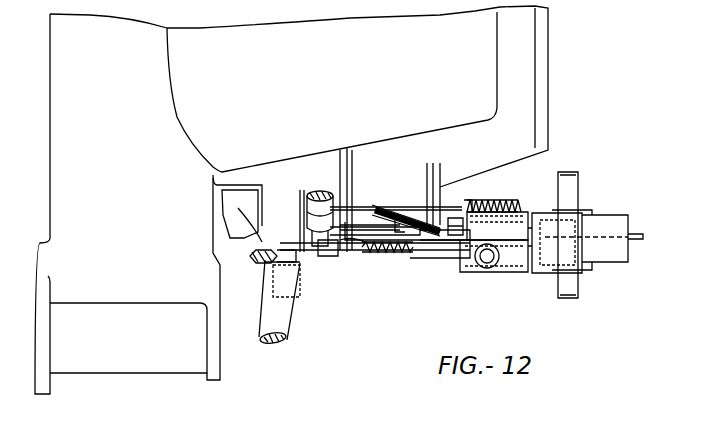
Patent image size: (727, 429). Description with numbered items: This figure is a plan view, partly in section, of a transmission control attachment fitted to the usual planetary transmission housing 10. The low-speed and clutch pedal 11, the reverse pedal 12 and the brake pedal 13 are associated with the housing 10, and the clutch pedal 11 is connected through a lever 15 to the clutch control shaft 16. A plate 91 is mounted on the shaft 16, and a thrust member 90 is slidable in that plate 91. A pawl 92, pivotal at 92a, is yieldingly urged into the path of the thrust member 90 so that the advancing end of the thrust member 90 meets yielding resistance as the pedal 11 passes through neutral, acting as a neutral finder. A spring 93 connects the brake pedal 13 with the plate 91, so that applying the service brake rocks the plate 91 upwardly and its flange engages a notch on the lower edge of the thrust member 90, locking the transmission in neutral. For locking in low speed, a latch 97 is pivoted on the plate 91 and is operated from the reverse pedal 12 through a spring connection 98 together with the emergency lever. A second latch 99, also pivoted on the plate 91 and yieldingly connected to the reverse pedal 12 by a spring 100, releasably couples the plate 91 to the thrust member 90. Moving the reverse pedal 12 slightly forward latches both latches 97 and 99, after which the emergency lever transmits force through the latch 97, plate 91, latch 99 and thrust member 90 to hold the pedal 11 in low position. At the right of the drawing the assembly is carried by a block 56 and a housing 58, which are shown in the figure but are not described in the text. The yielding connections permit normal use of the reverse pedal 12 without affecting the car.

The housing 10 is at (105, 362).
The low-speed and clutch pedal 11 is at (282, 322).
The reverse pedal 12 is at (260, 232).
The brake pedal 13 is at (330, 194).
The lever 15 is at (420, 252).
The clutch control shaft 16 is at (458, 217).
The bracket block 56 is at (600, 220).
The housing 58 is at (500, 262).
The thrust member 90 is at (350, 226).
The plate 91 is at (432, 240).
The pawl 92 is at (490, 213).
The pivot 92a is at (468, 200).
The spring 93 is at (395, 216).
The latch 97 is at (642, 237).
The spring connection 98 is at (385, 258).
The latch 99 is at (352, 244).
The spring 100 is at (325, 257).